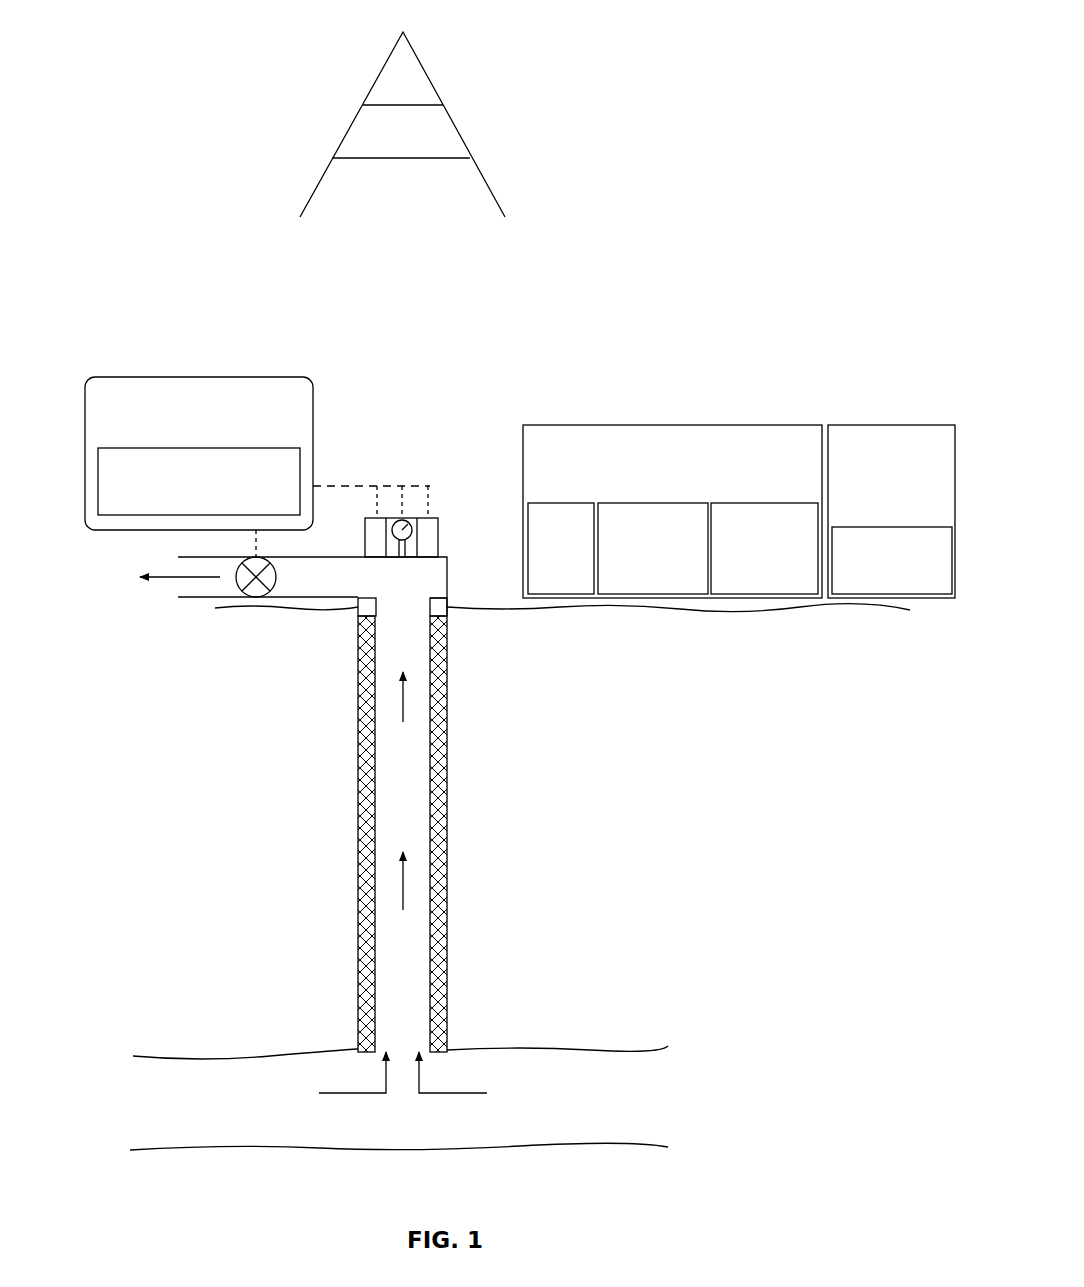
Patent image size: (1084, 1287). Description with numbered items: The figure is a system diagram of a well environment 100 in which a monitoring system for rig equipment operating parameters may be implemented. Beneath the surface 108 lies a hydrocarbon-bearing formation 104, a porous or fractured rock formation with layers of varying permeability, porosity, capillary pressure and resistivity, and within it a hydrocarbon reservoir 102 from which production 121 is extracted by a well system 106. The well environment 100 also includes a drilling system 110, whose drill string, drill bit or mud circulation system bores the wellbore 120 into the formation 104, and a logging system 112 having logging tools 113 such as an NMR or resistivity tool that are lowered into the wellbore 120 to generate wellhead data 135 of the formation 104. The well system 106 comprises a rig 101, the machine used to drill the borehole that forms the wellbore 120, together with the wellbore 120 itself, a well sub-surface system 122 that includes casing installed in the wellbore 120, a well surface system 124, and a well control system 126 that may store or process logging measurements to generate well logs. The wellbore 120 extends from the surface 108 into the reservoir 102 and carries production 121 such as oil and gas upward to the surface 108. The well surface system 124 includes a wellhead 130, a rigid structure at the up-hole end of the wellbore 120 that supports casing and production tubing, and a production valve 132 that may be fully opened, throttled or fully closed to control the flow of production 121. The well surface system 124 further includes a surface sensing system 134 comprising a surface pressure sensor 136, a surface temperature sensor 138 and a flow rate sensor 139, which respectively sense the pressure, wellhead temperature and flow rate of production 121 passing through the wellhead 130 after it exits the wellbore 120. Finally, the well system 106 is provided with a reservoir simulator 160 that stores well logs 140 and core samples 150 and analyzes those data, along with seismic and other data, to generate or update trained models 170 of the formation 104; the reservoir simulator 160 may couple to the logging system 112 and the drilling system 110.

The well environment 100 is at (637, 182).
The rig 101 is at (449, 82).
The hydrocarbon reservoir 102 is at (548, 1135).
The hydrocarbon-bearing formation 104 is at (632, 912).
The well system 106 is at (196, 309).
The surface 108 is at (741, 614).
The drilling system 110 is at (217, 116).
The logging system 112 is at (883, 425).
The logging tools 113 is at (880, 527).
The wellbore 120 is at (460, 797).
The production 121 is at (88, 599).
The well sub-surface system 122 is at (329, 863).
The well surface system 124 is at (757, 371).
The well control system 126 is at (135, 378).
The wellhead 130 is at (456, 593).
The production valve 132 is at (256, 598).
The surface sensing system 134 is at (442, 538).
The wellhead data 135 is at (152, 447).
The surface pressure sensor 136 is at (391, 518).
The surface temperature sensor 138 is at (430, 518).
The flow rate sensor 139 is at (375, 518).
The well logs 140 is at (560, 503).
The core samples 150 is at (650, 503).
The reservoir simulator 160 is at (640, 424).
The trained models 170 is at (752, 503).